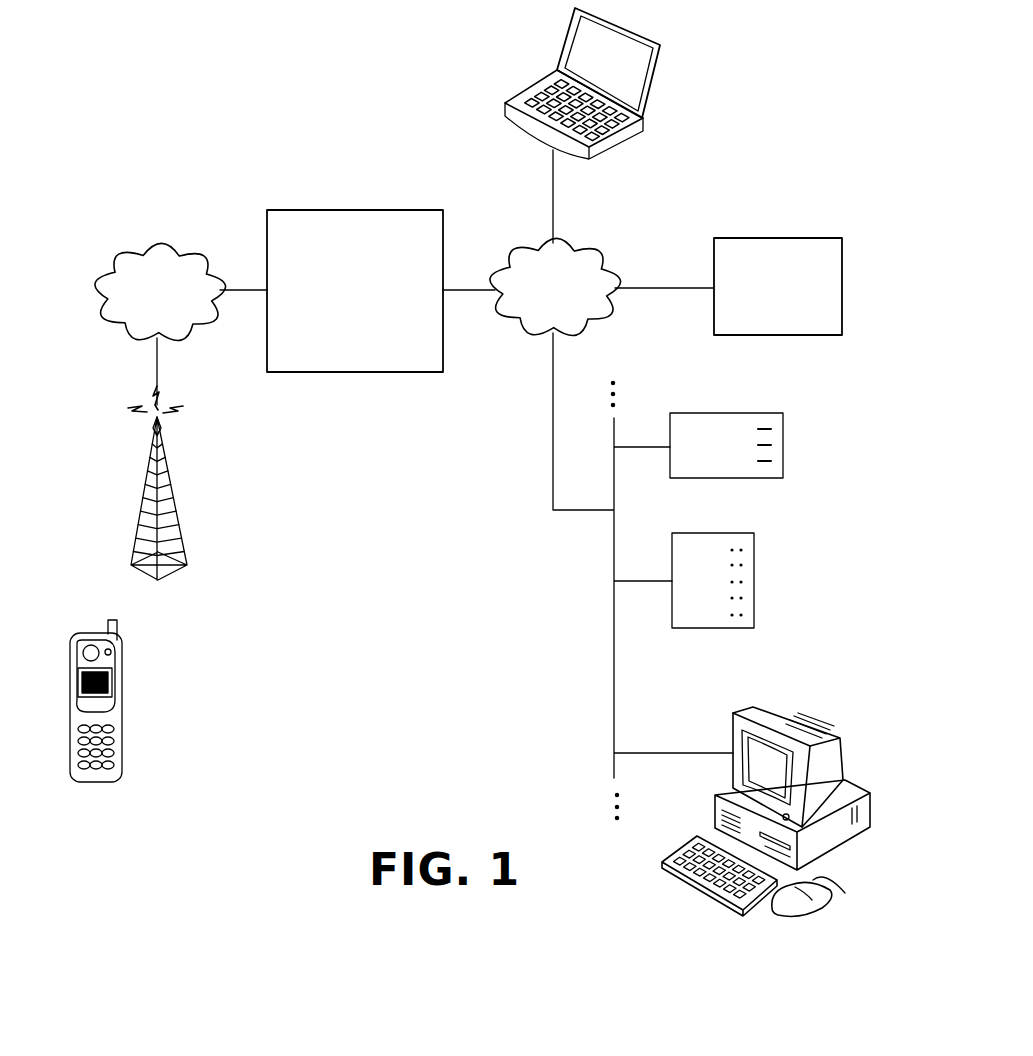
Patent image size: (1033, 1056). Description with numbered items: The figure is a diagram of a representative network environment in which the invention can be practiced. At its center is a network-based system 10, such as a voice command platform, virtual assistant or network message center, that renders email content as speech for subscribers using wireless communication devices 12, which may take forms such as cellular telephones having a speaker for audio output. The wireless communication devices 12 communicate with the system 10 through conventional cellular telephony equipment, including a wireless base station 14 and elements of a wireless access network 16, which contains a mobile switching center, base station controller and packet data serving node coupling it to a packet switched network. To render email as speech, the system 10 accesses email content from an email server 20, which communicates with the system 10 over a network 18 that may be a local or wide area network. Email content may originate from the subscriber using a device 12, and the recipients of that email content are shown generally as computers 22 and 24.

The network-based system 10 is at (338, 188).
The wireless communication device 12 is at (123, 724).
The wireless base station 14 is at (180, 513).
The wireless access network 16 is at (148, 245).
The network 18 is at (585, 247).
The email server 20 is at (778, 238).
The computer 22 is at (660, 80).
The computer 24 is at (817, 718).